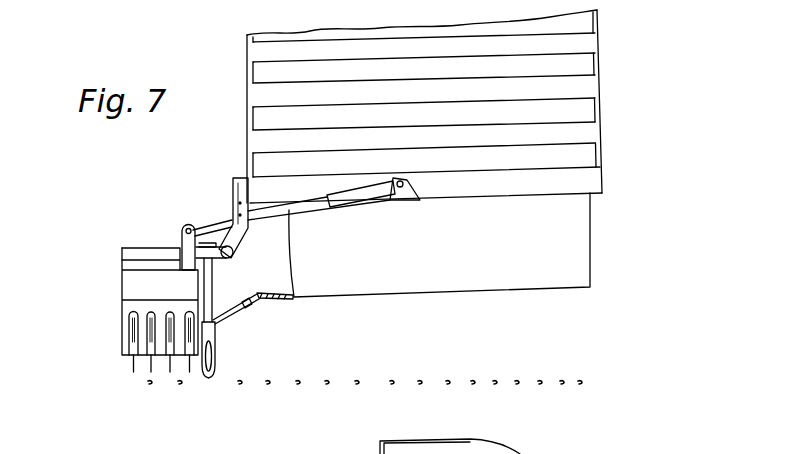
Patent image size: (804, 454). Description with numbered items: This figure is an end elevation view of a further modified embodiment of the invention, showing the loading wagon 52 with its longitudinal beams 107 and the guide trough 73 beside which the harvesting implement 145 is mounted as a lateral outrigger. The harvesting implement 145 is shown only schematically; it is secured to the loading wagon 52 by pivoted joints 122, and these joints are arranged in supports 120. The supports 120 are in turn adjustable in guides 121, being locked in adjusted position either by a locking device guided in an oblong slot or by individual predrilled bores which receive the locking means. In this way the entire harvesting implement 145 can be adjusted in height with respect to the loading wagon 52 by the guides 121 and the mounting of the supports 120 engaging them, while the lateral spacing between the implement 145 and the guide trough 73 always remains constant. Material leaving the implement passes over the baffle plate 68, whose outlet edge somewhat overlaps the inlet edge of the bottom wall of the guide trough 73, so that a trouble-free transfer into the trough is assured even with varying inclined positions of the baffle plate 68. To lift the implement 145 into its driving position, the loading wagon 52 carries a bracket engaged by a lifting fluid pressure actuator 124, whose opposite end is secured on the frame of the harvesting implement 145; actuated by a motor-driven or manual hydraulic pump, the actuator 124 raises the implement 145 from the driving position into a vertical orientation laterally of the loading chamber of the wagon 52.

The loading wagon 52 is at (424, 106).
The longitudinal beams 107 is at (590, 181).
The guide trough 73 is at (626, 240).
The lifting fluid pressure actuator 124 is at (330, 225).
The supports 120 is at (240, 182).
The guides 121 is at (192, 211).
The pivoted joints 122 is at (225, 247).
The baffle plate 68 is at (228, 316).
The harvesting implement 145 is at (150, 388).